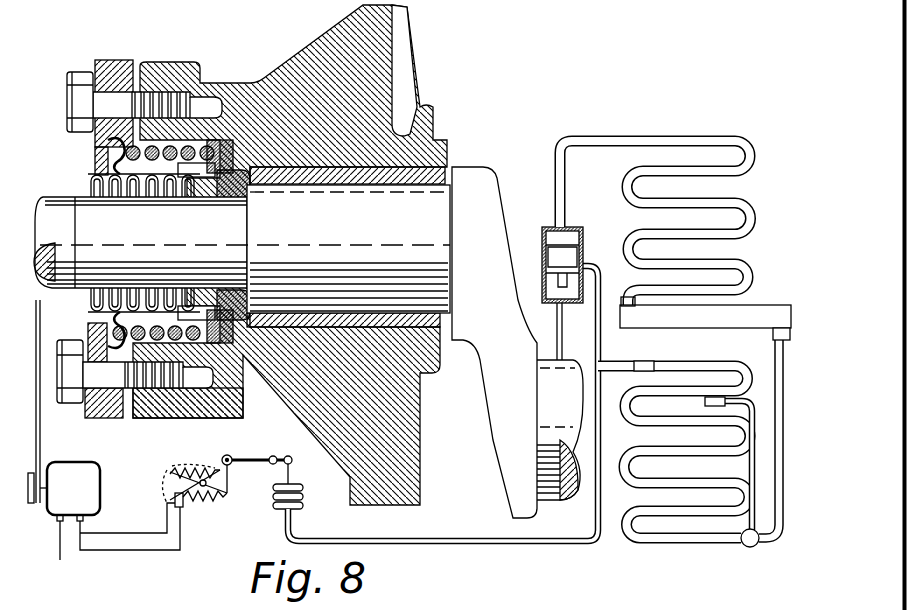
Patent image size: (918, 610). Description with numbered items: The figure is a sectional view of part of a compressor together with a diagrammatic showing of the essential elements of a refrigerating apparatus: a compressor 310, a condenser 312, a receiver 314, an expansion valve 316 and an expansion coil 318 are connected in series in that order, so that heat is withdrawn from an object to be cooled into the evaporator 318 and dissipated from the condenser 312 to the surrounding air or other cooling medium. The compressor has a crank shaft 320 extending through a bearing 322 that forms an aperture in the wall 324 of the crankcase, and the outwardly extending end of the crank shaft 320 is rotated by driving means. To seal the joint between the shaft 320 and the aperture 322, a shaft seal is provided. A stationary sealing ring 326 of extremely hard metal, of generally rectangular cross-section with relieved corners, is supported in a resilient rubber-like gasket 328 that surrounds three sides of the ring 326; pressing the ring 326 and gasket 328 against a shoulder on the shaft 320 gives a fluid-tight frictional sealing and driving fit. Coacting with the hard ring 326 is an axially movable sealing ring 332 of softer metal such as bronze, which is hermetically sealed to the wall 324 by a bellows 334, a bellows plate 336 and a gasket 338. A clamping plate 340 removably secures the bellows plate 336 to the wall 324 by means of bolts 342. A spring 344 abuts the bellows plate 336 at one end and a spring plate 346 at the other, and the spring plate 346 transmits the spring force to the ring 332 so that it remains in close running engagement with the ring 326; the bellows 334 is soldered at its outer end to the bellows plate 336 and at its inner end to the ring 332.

The compressor 310 is at (542, 233).
The condenser 312 is at (718, 197).
The receiver 314 is at (741, 305).
The expansion valve 316 is at (750, 550).
The expansion coil 318 is at (676, 523).
The crank shaft 320 is at (477, 175).
The bearing 322 is at (400, 177).
The wall 324 is at (373, 40).
The stationary sealing ring 326 is at (230, 182).
The gasket 328 is at (243, 418).
The axially movable sealing ring 332 is at (193, 411).
The bellows 334 is at (95, 180).
The bellows plate 336 is at (100, 163).
The gasket 338 is at (140, 80).
The clamping plate 340 is at (110, 67).
The bolts 342 is at (77, 77).
The spring 344 is at (108, 150).
The spring plate 346 is at (212, 147).